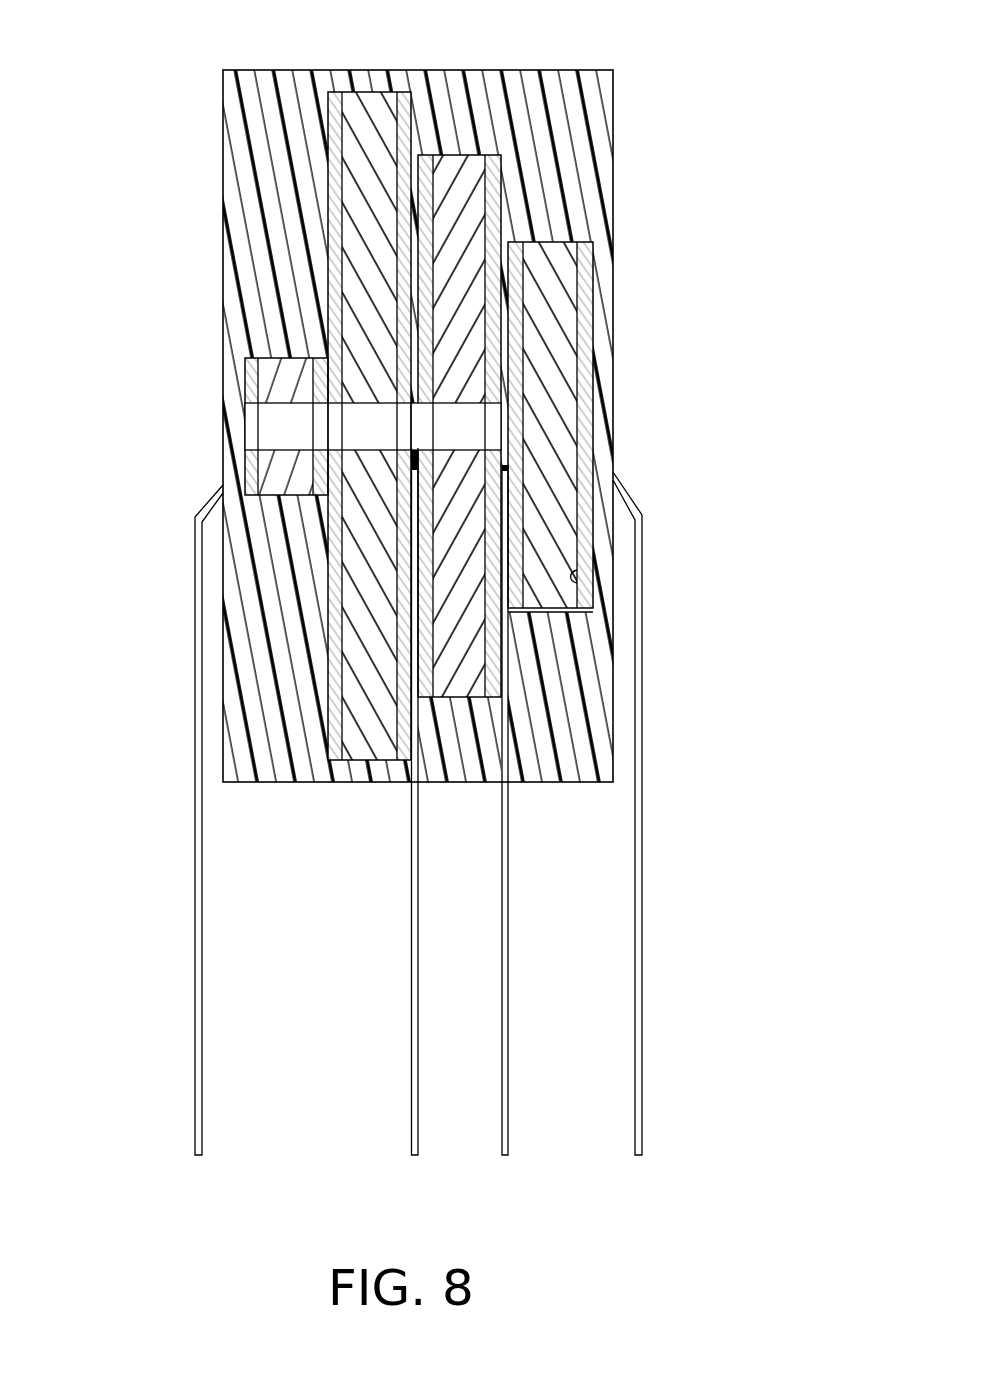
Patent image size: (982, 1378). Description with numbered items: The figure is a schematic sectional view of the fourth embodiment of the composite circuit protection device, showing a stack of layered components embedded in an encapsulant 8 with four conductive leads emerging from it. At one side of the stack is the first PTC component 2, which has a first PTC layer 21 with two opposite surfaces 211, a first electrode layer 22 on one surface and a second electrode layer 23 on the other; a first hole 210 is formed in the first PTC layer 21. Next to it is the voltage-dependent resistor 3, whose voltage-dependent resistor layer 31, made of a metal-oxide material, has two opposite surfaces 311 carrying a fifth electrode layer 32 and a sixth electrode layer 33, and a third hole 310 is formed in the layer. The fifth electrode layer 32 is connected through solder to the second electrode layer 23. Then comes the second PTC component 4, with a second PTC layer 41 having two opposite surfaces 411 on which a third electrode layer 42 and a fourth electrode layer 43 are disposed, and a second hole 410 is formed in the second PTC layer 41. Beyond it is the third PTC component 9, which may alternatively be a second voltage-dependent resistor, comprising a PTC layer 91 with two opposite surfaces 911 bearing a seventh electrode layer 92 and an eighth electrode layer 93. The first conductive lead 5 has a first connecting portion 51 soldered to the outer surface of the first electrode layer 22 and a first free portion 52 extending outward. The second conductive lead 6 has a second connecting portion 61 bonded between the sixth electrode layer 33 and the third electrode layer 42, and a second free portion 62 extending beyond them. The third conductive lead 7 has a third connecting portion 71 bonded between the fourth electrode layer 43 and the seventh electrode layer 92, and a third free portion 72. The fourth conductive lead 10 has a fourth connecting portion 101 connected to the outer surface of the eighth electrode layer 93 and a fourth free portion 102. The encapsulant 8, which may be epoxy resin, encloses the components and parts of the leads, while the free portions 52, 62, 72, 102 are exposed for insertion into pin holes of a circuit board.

The encapsulant 8 is at (223, 118).
The first PTC component 2 is at (222, 468).
The first PTC layer 21 is at (283, 485).
The first electrode layer 22 is at (253, 465).
The second electrode layer 23 is at (318, 490).
The first hole 210 is at (275, 428).
The two opposite surfaces 211 is at (300, 362).
The voltage-dependent resistor 3 is at (331, 448).
The voltage-dependent resistor layer 31 is at (360, 760).
The fifth electrode layer 32 is at (330, 760).
The sixth electrode layer 33 is at (405, 760).
The third hole 310 is at (367, 420).
The two opposite surfaces 311 is at (397, 112).
The second PTC component 4 is at (542, 441).
The second PTC layer 41 is at (457, 167).
The third electrode layer 42 is at (428, 163).
The fourth electrode layer 43 is at (493, 168).
The second hole 410 is at (455, 420).
The two opposite surfaces 411 is at (487, 680).
The third PTC component 9 is at (622, 418).
The PTC layer 91 is at (555, 265).
The seventh electrode layer 92 is at (518, 285).
The eighth electrode layer 93 is at (585, 250).
The two opposite surfaces 911 is at (570, 612).
The first conductive lead 5 is at (138, 811).
The first connecting portion 51 is at (205, 503).
The first free portion 52 is at (195, 745).
The second conductive lead 6 is at (404, 801).
The second connecting portion 61 is at (416, 720).
The second free portion 62 is at (415, 1020).
The third conductive lead 7 is at (559, 810).
The third connecting portion 71 is at (507, 647).
The third free portion 72 is at (585, 952).
The fourth conductive lead 10 is at (714, 806).
The fourth connecting portion 101 is at (630, 502).
The fourth free portion 102 is at (770, 688).